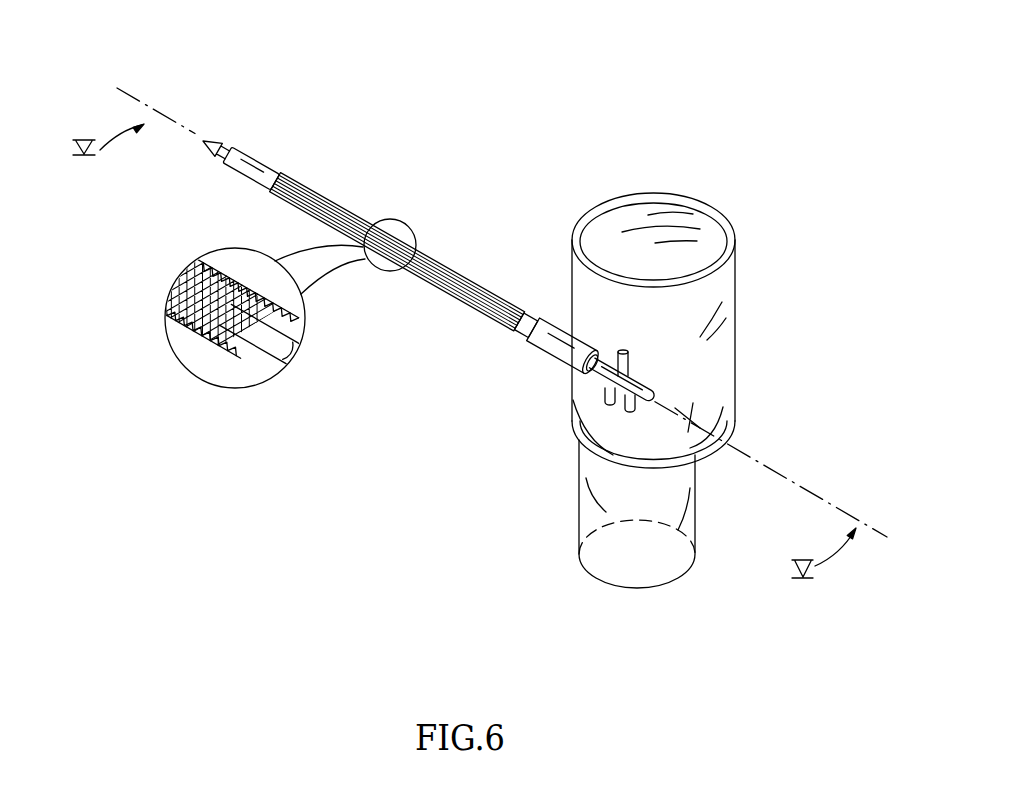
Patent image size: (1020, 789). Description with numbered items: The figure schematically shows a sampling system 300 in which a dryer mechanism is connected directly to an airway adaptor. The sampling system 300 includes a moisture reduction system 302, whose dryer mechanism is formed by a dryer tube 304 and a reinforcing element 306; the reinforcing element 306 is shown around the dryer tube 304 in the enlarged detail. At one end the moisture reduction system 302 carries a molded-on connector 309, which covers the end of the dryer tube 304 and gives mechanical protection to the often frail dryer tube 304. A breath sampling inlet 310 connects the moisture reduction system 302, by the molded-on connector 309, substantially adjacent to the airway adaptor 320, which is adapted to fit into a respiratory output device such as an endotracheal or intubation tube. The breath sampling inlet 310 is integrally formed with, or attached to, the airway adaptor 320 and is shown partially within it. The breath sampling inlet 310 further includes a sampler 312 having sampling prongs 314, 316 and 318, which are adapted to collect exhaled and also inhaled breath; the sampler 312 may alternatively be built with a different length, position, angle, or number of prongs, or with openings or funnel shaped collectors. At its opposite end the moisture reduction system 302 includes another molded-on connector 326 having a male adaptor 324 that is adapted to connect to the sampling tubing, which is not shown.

The sampling system 300 is at (636, 52).
The moisture reduction system 302 is at (419, 212).
The dryer tube 304 is at (280, 352).
The reinforcing element 306 is at (191, 344).
The molded-on connector 309 is at (510, 339).
The breath sampling inlet 310 is at (540, 366).
The sampler 312 is at (683, 398).
The sampling prong 314 is at (603, 357).
The sampling prong 316 is at (630, 413).
The sampling prong 318 is at (609, 405).
The airway adaptor 320 is at (772, 300).
The male adaptor 324 is at (215, 128).
The molded-on connector 326 is at (279, 147).